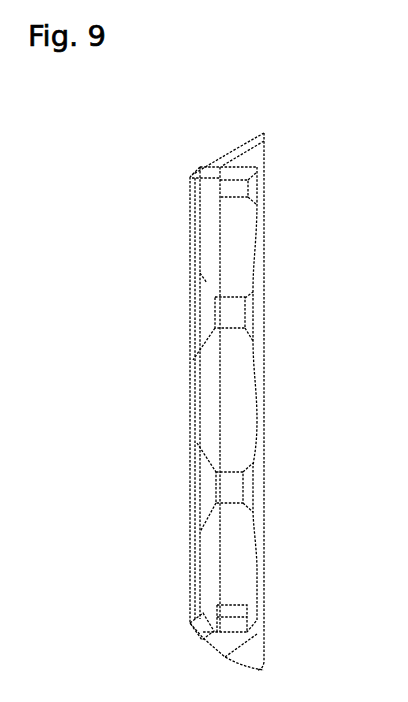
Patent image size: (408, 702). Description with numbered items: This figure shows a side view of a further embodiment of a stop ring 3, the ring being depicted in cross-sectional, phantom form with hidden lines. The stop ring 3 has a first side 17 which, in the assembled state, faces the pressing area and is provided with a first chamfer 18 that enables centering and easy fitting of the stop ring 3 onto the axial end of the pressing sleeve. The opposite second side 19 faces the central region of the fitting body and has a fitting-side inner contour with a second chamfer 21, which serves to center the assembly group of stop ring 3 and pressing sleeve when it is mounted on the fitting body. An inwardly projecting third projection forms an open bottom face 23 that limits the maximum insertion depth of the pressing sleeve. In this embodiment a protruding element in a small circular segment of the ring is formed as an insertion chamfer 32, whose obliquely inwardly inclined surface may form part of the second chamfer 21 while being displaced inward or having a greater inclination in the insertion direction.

The stop ring 3 is at (237, 147).
The first side 17 is at (264, 157).
The first chamfer 18 is at (262, 620).
The second side 19 is at (186, 189).
The second chamfer 21 is at (192, 213).
The open bottom face 23 is at (207, 615).
The insertion chamfer 32 is at (195, 404).